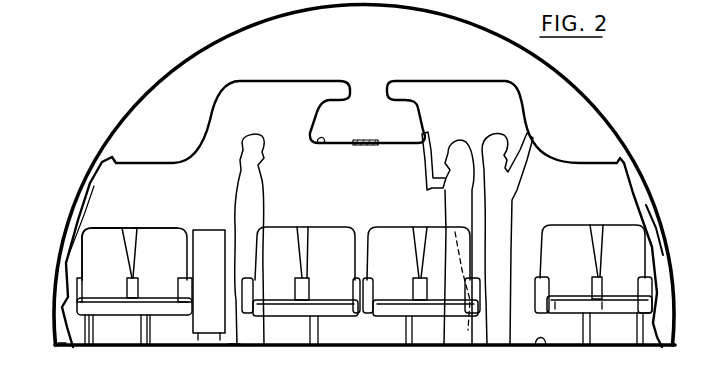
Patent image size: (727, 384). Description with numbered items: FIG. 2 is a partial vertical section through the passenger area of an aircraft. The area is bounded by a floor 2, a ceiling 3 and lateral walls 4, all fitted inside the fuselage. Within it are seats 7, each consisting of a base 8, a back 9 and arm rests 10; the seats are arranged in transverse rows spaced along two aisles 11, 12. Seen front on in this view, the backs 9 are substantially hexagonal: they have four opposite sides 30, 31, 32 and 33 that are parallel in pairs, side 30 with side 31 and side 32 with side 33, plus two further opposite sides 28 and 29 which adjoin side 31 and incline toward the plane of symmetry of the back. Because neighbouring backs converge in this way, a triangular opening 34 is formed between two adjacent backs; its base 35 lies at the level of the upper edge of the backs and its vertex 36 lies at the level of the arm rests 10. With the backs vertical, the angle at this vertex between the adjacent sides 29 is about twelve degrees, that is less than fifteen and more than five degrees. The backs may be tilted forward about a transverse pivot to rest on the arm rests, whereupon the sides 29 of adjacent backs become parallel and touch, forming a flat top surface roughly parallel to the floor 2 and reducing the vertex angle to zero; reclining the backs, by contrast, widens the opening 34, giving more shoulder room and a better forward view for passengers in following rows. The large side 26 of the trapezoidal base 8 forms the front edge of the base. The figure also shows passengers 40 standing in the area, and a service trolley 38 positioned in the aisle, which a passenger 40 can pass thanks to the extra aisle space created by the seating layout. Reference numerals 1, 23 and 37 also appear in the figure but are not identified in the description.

The fuselage 1 is at (163, 73).
The floor 2 is at (168, 345).
The ceiling 3 is at (347, 75).
The lateral walls 4 is at (97, 178).
The seats 7 is at (84, 259).
The base 8 is at (186, 288).
The back 9 is at (83, 200).
The arm rests 10 is at (118, 298).
The aisle 11 is at (233, 344).
The aisle 12 is at (542, 340).
The seat bottom cushion 23 is at (336, 316).
The large side 26 is at (162, 297).
The inclined side 28 is at (186, 228).
The inclined side 29 is at (127, 237).
The side 30 is at (123, 308).
The side 31 is at (103, 228).
The side 32 is at (63, 347).
The side 33 is at (122, 298).
The triangular opening 34 is at (133, 242).
The base of triangular opening 35 is at (137, 227).
The vertex 36 is at (137, 277).
The bin latch 37 is at (320, 144).
The service trolley 38 is at (212, 230).
The passenger 40 is at (255, 134).